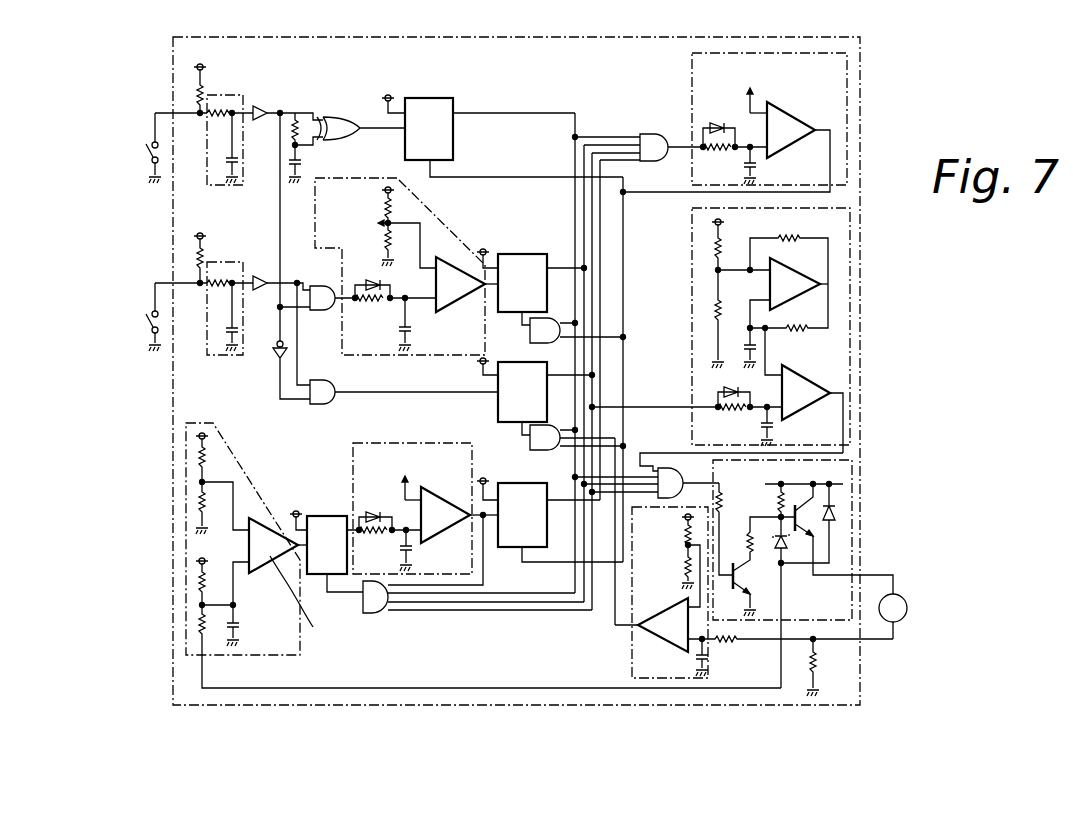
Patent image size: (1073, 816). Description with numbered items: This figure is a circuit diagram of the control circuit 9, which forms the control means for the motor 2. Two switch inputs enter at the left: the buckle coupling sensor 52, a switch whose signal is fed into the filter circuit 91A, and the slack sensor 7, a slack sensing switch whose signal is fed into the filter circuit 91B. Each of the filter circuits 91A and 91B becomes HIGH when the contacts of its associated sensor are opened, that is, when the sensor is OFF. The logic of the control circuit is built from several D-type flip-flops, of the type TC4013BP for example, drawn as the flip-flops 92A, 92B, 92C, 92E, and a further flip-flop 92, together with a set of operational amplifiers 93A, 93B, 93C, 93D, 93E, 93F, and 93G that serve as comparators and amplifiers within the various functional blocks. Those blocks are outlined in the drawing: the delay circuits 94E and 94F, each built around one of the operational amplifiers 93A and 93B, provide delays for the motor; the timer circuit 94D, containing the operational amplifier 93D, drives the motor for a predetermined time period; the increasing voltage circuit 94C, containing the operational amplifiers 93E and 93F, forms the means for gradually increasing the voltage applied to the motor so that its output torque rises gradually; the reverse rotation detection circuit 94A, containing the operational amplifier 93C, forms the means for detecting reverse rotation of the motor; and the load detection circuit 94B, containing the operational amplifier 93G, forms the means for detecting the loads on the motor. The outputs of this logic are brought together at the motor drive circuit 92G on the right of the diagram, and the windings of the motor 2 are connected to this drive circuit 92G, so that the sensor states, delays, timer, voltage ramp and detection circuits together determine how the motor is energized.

The motor 2 is at (907, 610).
The slack sensor 7 is at (150, 316).
The control circuit 9 is at (860, 130).
The buckle coupling sensor 52 is at (160, 154).
The filter circuit 91A is at (242, 93).
The filter circuit 91B is at (238, 258).
The flip-flop 92 is at (521, 483).
The D-type flip-flop 92A is at (440, 98).
The D-type flip-flop 92B is at (532, 254).
The D-type flip-flop 92C is at (523, 362).
The D-type flip-flop 92E is at (327, 516).
The motor drive circuit 92G is at (828, 578).
The operational amplifier 93A is at (454, 256).
The operational amplifier 93B is at (446, 486).
The operational amplifier 93C is at (265, 517).
The operational amplifier 93D is at (791, 112).
The operational amplifier 93E is at (800, 272).
The operational amplifier 93F is at (800, 378).
The operational amplifier 93G is at (662, 612).
The reverse rotation detection circuit 94A is at (483, 555).
The load detection circuit 94B is at (726, 592).
The increasing voltage circuit 94C is at (808, 330).
The timer circuit 94D is at (775, 122).
The delay circuit 94E is at (402, 266).
The delay circuit 94F is at (425, 489).